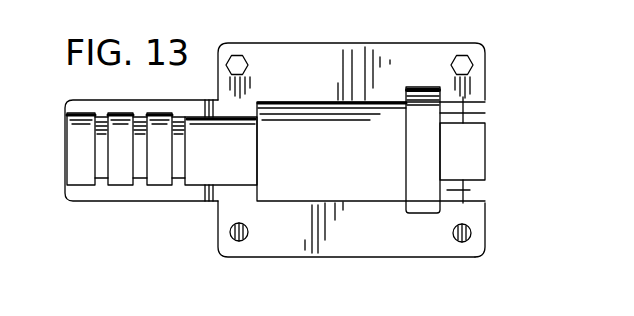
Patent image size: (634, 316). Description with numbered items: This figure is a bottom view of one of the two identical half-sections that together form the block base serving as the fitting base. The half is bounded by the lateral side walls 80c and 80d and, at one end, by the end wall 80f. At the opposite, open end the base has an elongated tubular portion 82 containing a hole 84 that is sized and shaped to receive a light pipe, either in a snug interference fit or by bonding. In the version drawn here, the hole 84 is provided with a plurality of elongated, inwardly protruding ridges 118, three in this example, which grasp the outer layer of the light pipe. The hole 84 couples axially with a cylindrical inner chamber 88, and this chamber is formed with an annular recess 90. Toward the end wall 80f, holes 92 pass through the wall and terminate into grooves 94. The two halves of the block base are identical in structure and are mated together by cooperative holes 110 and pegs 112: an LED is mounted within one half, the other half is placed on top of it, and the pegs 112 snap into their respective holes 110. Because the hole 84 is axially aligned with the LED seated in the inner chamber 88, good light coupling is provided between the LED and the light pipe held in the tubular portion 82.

The lateral side wall 80c is at (262, 257).
The lateral side wall 80d is at (365, 43).
The end wall 80f is at (487, 237).
The elongated tubular portion 82 is at (108, 100).
The hole 84 is at (75, 152).
The cylindrical inner chamber 88 is at (313, 188).
The annular recess 90 is at (427, 203).
The holes 92 is at (472, 115).
The grooves 94 is at (477, 107).
The holes 110 is at (235, 241).
The pegs 112 is at (242, 54).
The inwardly protruding ridges 118 is at (170, 170).